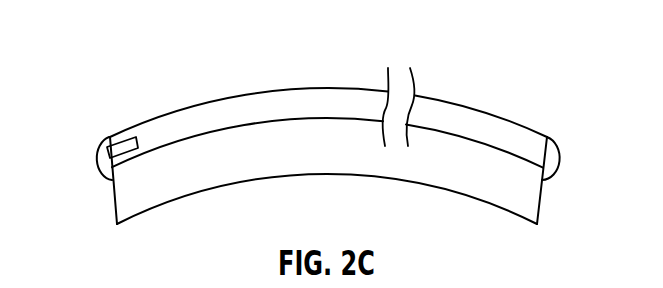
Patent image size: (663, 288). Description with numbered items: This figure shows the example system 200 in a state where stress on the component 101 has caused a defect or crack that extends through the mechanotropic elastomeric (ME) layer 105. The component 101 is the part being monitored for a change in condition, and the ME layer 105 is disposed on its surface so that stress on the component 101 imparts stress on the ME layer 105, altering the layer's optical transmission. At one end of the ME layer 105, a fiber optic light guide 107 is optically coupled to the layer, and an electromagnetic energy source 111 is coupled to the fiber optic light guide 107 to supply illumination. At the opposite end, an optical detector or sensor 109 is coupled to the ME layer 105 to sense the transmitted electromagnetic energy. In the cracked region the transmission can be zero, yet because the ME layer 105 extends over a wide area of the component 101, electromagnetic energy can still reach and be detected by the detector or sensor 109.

The example system 200 is at (482, 38).
The component 101 is at (340, 160).
The mechanotropic elastomeric layer 105 is at (332, 107).
The fiber optic light guide 107 is at (123, 148).
The optical detector or sensor 109 is at (555, 155).
The electromagnetic energy source 111 is at (101, 158).